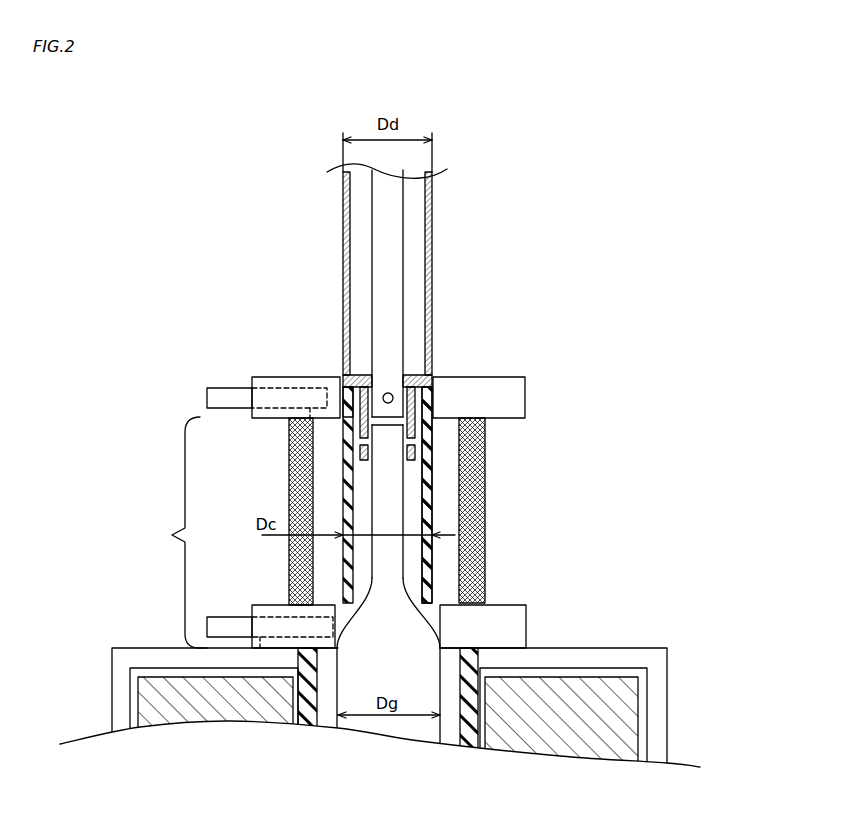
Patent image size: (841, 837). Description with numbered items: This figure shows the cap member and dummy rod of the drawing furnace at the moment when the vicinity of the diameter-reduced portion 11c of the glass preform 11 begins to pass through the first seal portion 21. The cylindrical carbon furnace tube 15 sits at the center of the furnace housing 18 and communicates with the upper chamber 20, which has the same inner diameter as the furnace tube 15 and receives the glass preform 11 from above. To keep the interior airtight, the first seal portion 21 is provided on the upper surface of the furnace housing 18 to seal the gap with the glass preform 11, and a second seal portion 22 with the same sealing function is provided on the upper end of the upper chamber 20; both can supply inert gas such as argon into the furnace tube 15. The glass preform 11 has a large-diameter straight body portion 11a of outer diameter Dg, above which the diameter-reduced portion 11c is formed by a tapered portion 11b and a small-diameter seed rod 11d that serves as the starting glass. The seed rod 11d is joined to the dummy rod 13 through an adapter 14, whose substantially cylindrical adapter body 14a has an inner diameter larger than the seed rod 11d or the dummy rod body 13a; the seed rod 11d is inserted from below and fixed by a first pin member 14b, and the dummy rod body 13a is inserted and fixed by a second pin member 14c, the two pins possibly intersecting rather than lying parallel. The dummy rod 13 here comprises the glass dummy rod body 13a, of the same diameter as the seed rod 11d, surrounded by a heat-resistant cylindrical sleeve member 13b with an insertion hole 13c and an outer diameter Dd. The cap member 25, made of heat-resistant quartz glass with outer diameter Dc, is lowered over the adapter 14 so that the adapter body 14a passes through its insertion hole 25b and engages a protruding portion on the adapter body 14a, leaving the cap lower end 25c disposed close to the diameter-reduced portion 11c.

The glass preform 11 is at (392, 609).
The straight body portion 11a is at (445, 670).
The tapered portion 11b is at (362, 608).
The diameter-reduced portion 11c is at (172, 535).
The seed rod 11d is at (372, 478).
The dummy rod 13 is at (433, 207).
The dummy rod body 13a is at (378, 263).
The sleeve member 13b is at (430, 262).
The insertion hole 13c is at (373, 380).
The adapter 14 is at (430, 430).
The adapter body 14a is at (345, 423).
The first pin member 14b is at (430, 447).
The second pin member 14c is at (391, 395).
The furnace tube 15 is at (300, 724).
The furnace housing 18 is at (655, 685).
The upper chamber 20 is at (290, 500).
The first seal portion 21 is at (518, 625).
The second seal portion 22 is at (512, 392).
The cap member 25 is at (437, 509).
The insertion hole 25b is at (345, 382).
The cap lower end 25c is at (328, 615).